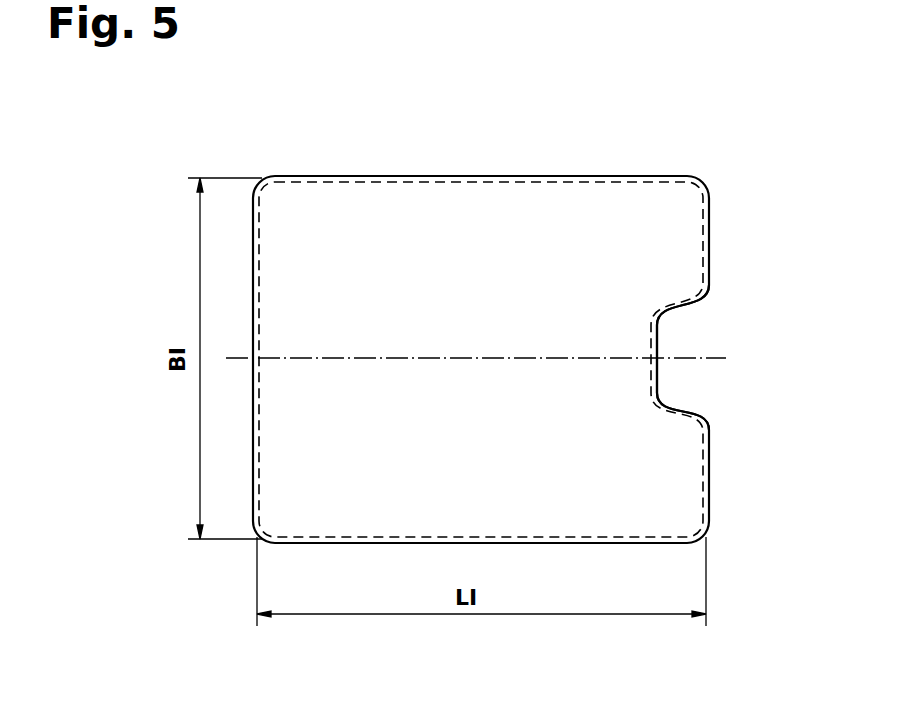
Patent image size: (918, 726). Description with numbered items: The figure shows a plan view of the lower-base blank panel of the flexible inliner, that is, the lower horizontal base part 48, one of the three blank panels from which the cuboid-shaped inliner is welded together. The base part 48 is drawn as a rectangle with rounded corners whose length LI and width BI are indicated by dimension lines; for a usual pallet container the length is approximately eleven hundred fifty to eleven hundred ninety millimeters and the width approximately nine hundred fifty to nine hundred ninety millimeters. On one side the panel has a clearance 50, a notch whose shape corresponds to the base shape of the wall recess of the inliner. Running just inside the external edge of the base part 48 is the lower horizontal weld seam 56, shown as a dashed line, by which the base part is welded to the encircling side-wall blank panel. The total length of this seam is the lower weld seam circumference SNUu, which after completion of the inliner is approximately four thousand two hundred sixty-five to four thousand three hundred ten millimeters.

The lower horizontal base part 48 is at (637, 237).
The lower horizontal weld seam 56 is at (565, 178).
The clearance 50 is at (698, 334).
The lower weld seam circumference SNUu is at (463, 177).